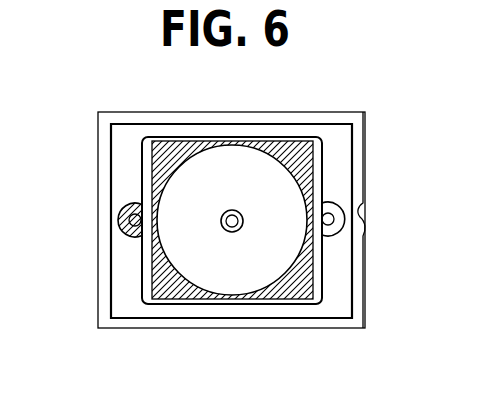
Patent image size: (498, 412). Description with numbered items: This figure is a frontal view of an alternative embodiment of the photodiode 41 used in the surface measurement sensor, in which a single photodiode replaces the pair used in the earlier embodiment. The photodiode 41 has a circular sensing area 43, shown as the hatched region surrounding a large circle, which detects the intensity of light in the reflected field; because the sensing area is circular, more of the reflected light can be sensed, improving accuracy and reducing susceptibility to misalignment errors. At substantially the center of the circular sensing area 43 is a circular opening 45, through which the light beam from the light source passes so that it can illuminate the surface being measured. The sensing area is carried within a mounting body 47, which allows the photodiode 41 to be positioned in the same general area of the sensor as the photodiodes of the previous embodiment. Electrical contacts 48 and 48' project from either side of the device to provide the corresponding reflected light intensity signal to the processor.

The photodiode 41 is at (122, 102).
The circular sensing area 43 is at (239, 160).
The circular opening 45 is at (232, 233).
The mounting body 47 is at (338, 124).
The electrical contact 48 is at (372, 213).
The electrical contact 48' is at (92, 237).